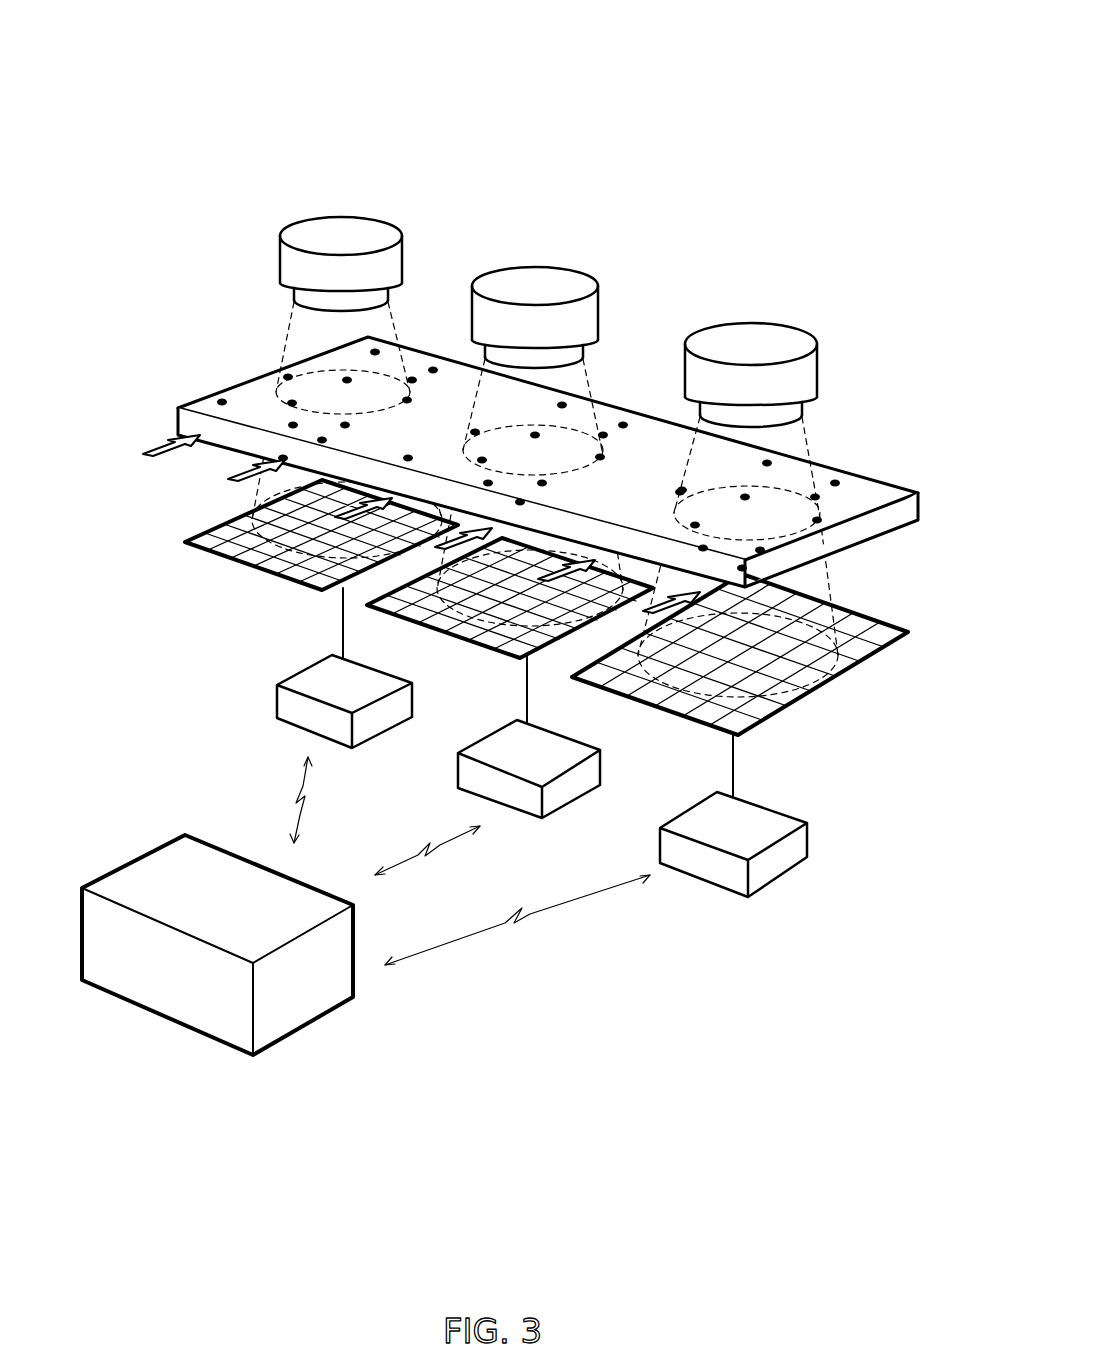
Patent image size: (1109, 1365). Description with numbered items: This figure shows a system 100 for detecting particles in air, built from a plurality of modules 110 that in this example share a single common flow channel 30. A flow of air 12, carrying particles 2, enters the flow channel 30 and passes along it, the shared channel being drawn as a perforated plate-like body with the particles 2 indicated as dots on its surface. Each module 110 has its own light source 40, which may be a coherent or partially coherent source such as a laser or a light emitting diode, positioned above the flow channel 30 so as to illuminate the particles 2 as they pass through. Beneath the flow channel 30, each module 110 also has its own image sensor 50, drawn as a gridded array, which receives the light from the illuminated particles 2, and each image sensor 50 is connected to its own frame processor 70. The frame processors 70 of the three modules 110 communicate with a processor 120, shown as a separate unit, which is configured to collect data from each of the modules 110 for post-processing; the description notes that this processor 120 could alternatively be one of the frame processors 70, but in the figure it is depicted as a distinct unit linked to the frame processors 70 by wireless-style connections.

The system 100 is at (808, 68).
The module 110 is at (445, 188).
The light source 40 is at (372, 228).
The flow channel 30 is at (246, 388).
The particles 2 is at (762, 552).
The flow of air 12 is at (150, 446).
The image sensor 50 is at (184, 543).
The frame processor 70 is at (277, 707).
The processor 120 is at (300, 1007).